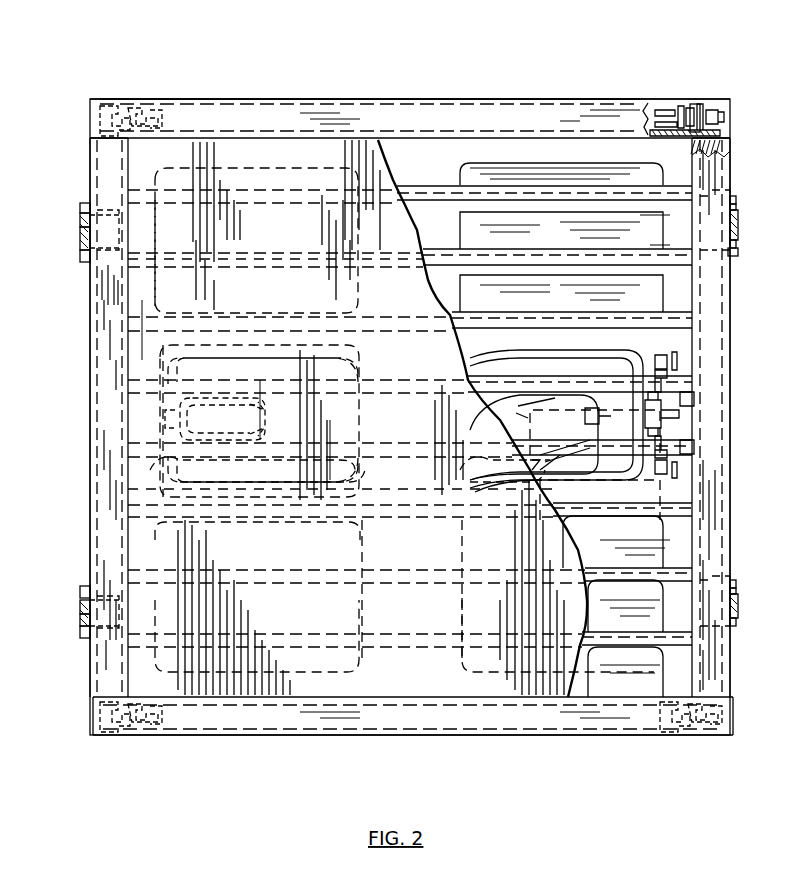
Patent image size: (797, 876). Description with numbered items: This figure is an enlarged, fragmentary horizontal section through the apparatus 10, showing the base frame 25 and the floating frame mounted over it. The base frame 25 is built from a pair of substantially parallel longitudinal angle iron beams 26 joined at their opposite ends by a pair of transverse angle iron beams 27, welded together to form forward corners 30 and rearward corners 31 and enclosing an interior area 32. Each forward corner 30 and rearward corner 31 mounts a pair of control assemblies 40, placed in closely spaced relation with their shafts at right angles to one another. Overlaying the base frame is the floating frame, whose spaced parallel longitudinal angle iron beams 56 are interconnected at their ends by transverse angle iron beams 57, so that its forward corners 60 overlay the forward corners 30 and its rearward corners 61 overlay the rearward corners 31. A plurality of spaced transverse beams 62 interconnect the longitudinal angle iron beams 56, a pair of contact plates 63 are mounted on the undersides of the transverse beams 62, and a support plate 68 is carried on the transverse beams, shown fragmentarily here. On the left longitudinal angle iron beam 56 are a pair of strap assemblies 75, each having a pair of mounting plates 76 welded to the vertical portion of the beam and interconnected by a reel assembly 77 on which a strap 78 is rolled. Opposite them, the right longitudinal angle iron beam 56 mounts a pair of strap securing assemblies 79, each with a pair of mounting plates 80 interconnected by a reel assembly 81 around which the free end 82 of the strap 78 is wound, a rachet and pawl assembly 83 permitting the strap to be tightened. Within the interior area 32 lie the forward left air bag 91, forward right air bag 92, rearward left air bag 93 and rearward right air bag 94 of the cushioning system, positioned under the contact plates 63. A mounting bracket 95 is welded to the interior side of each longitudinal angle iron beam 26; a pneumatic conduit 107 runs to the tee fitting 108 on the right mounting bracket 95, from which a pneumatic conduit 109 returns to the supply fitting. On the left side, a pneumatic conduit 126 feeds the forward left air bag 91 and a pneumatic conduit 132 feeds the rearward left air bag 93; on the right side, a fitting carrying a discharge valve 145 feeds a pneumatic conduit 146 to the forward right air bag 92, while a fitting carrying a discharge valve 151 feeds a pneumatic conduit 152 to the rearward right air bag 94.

The apparatus 10 is at (185, 93).
The base frame 25 is at (673, 100).
The longitudinal angle iron beams 26 is at (92, 343).
The transverse angle iron beams 27 is at (318, 100).
The forward corners 30 is at (90, 111).
The rearward corners 31 is at (116, 735).
The interior area 32 is at (412, 148).
The control assemblies 40 is at (150, 112).
The longitudinal angle iron beams 56 is at (112, 437).
The transverse angle iron beams 57 is at (220, 104).
The forward corners 60 is at (92, 128).
The rearward corners 61 is at (93, 722).
The transverse beams 62 is at (560, 250).
The contact plates 63 is at (565, 449).
The support plate 68 is at (218, 255).
The strap assemblies 75 is at (82, 252).
The mounting plates 76 is at (80, 204).
The reel assembly 77 is at (80, 232).
The strap 78 is at (78, 220).
The strap securing assemblies 79 is at (742, 214).
The mounting plates 80 is at (738, 205).
The reel assembly 81 is at (733, 198).
The free end 82 is at (740, 228).
The rachet and pawl assembly 83 is at (734, 258).
The forward left air bag 91 is at (238, 170).
The forward right air bag 92 is at (493, 165).
The rearward left air bag 93 is at (364, 546).
The rearward right air bag 94 is at (460, 598).
The mounting bracket 95 is at (685, 405).
The pneumatic conduit 107 is at (562, 400).
The tee fitting 108 is at (628, 420).
The pneumatic conduit 109 is at (606, 440).
The pneumatic conduit 126 is at (360, 366).
The pneumatic conduit 132 is at (362, 470).
The discharge valve 145 is at (680, 360).
The pneumatic conduit 146 is at (515, 350).
The discharge valve 151 is at (680, 468).
The pneumatic conduit 152 is at (580, 490).